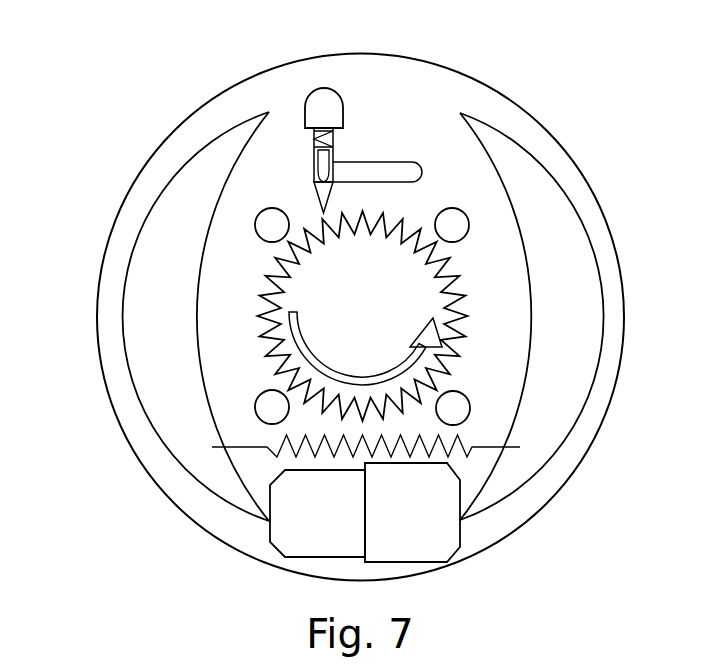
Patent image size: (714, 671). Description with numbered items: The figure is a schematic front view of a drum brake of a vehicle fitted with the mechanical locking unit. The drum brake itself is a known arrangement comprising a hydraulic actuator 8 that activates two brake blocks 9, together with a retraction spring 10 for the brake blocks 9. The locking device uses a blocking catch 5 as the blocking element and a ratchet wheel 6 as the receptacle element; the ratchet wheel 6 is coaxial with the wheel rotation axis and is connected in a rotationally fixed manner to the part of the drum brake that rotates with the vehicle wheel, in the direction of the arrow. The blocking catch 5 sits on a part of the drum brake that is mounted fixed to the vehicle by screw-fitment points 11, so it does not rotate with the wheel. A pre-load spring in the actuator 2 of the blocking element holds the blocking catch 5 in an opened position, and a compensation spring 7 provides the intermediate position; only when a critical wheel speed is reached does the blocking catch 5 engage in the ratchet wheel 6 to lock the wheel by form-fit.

The actuator of the blocking element 2 is at (320, 100).
The blocking catch 5 is at (387, 168).
The ratchet wheel 6 is at (423, 295).
The compensation spring of the intermediate position 7 is at (335, 140).
The hydraulic actuator 8 is at (438, 530).
The brake block 9 is at (145, 269).
The retraction spring 10 is at (297, 452).
The screw-fitment point 11 is at (270, 222).